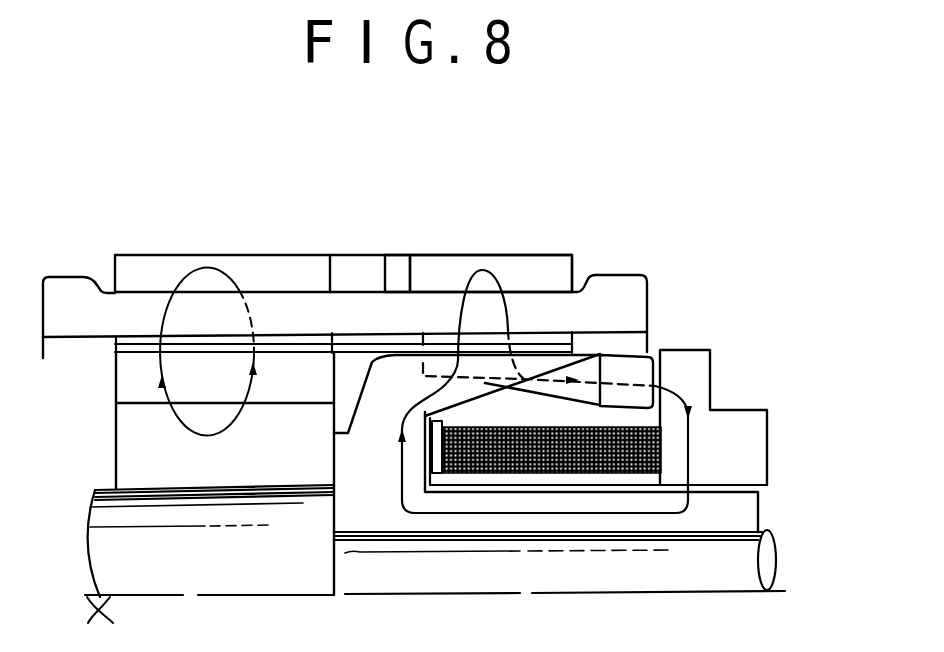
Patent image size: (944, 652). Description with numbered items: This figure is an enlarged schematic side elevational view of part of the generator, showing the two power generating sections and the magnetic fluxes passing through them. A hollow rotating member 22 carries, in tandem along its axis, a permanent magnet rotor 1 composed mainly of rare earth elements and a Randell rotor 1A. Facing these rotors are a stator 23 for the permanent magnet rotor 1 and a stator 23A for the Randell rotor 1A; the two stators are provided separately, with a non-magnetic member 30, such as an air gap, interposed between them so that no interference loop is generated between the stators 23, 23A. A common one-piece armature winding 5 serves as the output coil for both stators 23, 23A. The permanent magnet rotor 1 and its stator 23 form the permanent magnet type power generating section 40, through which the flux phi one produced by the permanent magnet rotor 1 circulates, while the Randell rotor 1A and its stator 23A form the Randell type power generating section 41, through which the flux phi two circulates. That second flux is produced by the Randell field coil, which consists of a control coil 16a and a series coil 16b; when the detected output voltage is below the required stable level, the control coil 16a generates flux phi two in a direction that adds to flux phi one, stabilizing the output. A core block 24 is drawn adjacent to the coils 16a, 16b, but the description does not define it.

The permanent magnet rotor 1 is at (128, 388).
The Randell rotor 1A is at (556, 362).
The common one-piece armature winding 5 is at (53, 292).
The hollow rotating member 22 is at (105, 540).
The stator for the permanent magnet rotor 23 is at (292, 270).
The stator for the Randell rotor 23A is at (552, 265).
The magnetic core 24 is at (693, 368).
The non-magnetic member 30 is at (398, 265).
The permanent magnet type power generating section 40 is at (222, 250).
The Randell type power generating section 41 is at (488, 251).
The control coil 16a is at (663, 424).
The series coil 16b is at (663, 460).